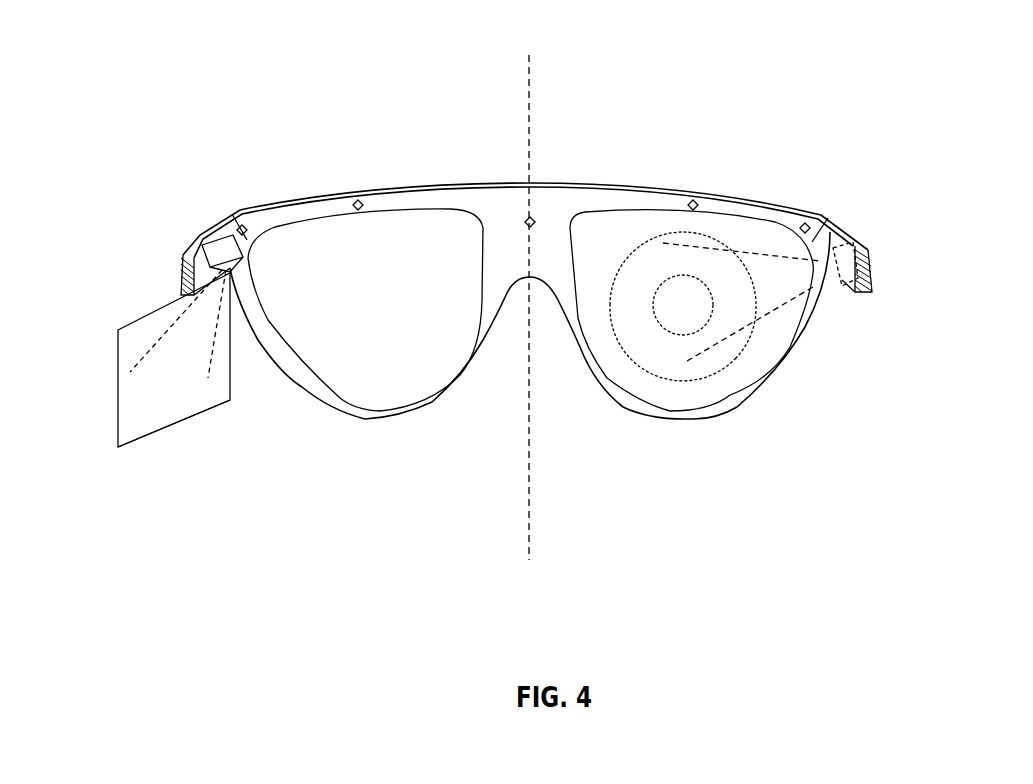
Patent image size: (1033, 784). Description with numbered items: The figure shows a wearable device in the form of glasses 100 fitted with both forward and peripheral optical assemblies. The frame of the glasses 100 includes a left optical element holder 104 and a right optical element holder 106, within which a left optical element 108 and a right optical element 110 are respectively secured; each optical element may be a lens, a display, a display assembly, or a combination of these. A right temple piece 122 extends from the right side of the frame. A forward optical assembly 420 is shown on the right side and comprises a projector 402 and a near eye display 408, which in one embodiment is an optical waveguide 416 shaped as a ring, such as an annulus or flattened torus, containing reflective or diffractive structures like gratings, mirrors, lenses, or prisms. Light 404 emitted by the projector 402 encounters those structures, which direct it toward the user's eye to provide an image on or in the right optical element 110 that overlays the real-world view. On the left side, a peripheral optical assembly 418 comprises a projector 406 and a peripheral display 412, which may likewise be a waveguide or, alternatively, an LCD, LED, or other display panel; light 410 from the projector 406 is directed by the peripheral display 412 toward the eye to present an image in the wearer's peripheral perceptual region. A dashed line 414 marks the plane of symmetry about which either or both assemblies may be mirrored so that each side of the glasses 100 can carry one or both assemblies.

The glasses 100 is at (400, 82).
The left optical element holder 104 is at (300, 383).
The right optical element holder 106 is at (588, 370).
The left optical element 108 is at (360, 390).
The right optical element 110 is at (638, 387).
The right temple piece 122 is at (858, 243).
The projector 402 is at (846, 283).
The light 404 is at (788, 258).
The projector 406 is at (217, 232).
The near eye display 408 is at (647, 215).
The light 410 is at (147, 354).
The peripheral display 412 is at (167, 427).
The dashed line 414 is at (532, 70).
The optical waveguide 416 is at (672, 363).
The peripheral optical assembly 418 is at (122, 248).
The forward optical assembly 420 is at (851, 433).